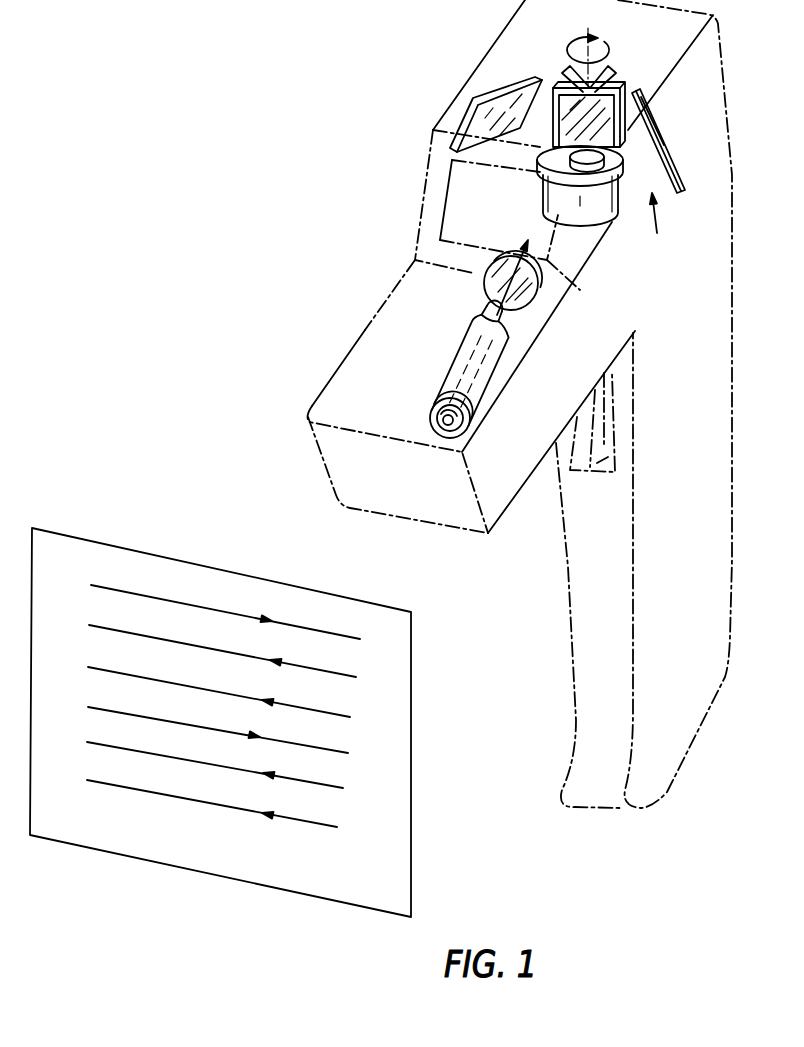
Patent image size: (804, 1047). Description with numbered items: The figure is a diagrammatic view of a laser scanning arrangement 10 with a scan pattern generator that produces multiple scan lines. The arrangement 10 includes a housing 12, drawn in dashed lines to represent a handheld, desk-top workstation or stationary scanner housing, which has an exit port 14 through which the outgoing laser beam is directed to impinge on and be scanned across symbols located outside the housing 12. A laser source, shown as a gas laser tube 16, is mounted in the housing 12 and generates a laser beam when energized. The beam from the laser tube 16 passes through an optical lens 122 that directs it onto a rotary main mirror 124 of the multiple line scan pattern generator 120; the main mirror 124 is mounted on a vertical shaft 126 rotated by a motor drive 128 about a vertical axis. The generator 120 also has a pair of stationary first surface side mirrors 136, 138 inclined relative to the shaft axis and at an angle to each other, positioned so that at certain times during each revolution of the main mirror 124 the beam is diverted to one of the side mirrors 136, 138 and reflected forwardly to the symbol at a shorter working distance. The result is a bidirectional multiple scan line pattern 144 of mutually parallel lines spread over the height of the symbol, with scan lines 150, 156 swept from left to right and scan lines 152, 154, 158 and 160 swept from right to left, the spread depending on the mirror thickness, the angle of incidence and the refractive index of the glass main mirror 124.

The arrangement 10 is at (402, 218).
The housing 12 is at (725, 463).
The exit port 14 is at (453, 162).
The gas laser tube 16 is at (447, 383).
The multiple line scan pattern generator 120 is at (664, 224).
The optical lens 122 is at (534, 303).
The rotary main mirror 124 is at (277, 535).
The vertical shaft 126 is at (612, 160).
The motor drive 128 is at (610, 217).
The first surface side mirror 136 is at (488, 97).
The first surface side mirror 138 is at (662, 140).
The bidirectional multiple scan line pattern 144 is at (247, 698).
The scan line 150 is at (110, 582).
The scan line 152 is at (107, 627).
The scan line 154 is at (112, 662).
The scan line 156 is at (107, 707).
The scan line 158 is at (118, 737).
The scan line 160 is at (122, 775).